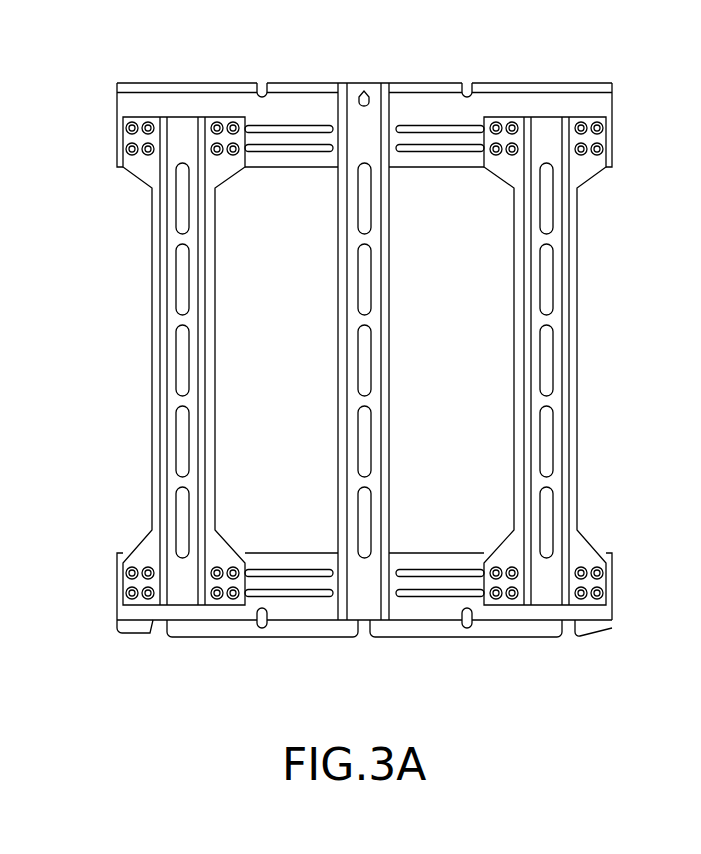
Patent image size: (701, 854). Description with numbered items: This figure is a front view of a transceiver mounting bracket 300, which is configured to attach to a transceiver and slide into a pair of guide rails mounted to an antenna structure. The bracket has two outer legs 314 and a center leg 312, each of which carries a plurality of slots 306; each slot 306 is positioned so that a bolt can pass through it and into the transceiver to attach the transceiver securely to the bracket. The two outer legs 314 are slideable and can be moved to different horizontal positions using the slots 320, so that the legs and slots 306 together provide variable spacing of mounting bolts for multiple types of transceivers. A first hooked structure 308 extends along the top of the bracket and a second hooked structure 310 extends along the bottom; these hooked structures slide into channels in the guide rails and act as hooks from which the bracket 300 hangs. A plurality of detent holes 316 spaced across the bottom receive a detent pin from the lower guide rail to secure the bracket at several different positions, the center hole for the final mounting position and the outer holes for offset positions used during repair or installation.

The transceiver mounting bracket 300 is at (373, 395).
The slots 306 is at (177, 213).
The first hooked structure 308 is at (587, 91).
The second hooked structure 310 is at (136, 614).
The center leg 312 is at (345, 447).
The outer legs 314 is at (162, 403).
The detent holes 316 is at (157, 661).
The slots 320 is at (463, 148).